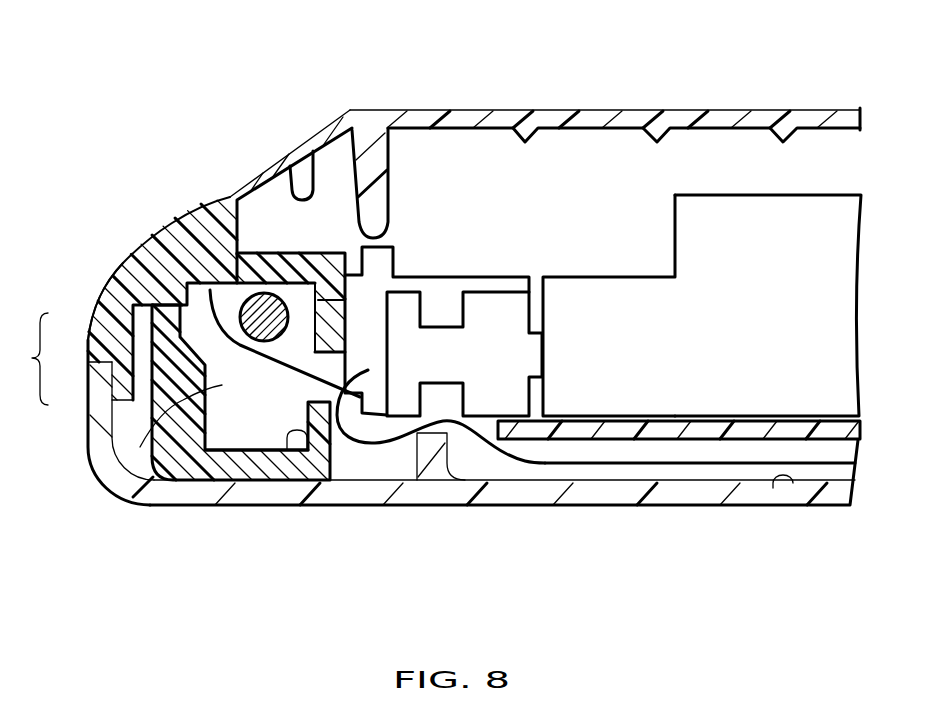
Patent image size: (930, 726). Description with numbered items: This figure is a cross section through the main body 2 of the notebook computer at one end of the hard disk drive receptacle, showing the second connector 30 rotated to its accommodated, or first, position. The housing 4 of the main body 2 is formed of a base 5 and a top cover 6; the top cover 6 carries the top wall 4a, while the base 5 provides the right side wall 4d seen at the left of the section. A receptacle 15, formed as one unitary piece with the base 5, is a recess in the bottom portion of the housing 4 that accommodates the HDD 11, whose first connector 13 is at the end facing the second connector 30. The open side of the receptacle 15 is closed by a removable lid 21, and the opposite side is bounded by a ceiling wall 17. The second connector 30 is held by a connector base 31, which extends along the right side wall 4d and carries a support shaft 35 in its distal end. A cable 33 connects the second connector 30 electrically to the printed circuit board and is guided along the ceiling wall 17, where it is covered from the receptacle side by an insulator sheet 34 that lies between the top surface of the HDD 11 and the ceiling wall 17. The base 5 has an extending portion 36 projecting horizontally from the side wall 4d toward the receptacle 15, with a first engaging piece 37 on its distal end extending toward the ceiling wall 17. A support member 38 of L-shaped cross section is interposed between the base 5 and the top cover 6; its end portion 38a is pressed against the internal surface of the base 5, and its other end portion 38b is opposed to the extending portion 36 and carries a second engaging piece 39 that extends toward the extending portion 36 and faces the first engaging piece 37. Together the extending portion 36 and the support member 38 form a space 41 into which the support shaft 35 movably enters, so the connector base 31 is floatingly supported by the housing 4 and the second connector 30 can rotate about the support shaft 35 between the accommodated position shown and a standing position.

The main body 2 is at (443, 519).
The housing 4 is at (31, 359).
The top wall 4a is at (605, 492).
The right side wall 4d is at (97, 298).
The base 5 is at (88, 330).
The top cover 6 is at (95, 387).
The HDD 11 is at (830, 308).
The first connector 13 is at (593, 287).
The receptacle 15 is at (712, 165).
The ceiling wall 17 is at (793, 483).
The lid 21 is at (463, 107).
The second connector 30 is at (497, 337).
The connector base 31 is at (343, 440).
The cable 33 is at (697, 467).
The insulator sheet 34 is at (740, 430).
The support shaft 35 is at (255, 298).
The extending portion 36 is at (267, 263).
The first engaging piece 37 is at (335, 328).
The support member 38 is at (173, 450).
The end portion 38a is at (160, 337).
The other end portion 38b is at (273, 462).
The second engaging piece 39 is at (293, 457).
The space 41 is at (170, 457).